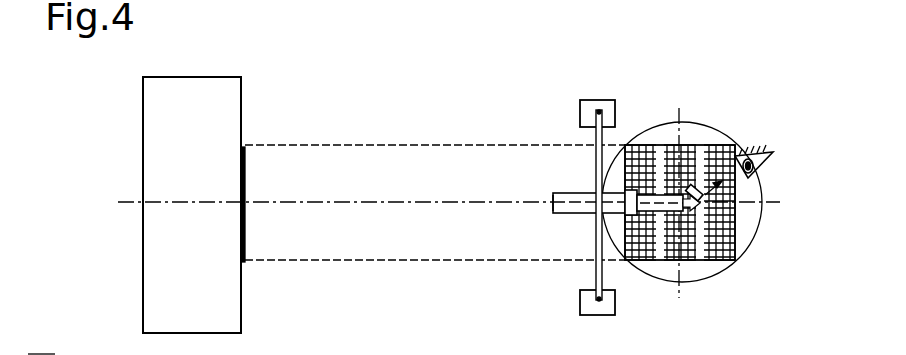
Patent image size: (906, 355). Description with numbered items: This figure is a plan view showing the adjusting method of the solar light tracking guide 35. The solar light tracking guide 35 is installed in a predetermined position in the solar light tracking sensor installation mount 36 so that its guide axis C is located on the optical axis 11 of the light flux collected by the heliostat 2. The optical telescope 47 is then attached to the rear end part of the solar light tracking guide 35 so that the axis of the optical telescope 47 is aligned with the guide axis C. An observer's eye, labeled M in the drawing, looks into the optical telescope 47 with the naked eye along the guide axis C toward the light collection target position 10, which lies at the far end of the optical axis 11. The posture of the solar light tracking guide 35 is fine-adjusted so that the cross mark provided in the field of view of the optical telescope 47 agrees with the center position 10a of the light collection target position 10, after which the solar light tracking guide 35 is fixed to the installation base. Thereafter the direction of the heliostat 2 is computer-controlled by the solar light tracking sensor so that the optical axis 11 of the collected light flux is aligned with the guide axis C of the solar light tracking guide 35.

The heliostat 2 is at (668, 140).
The light collection target position 10 is at (243, 170).
The center position of the light collection target position 10a is at (243, 207).
The optical axis 11 is at (315, 200).
The solar light tracking guide 35 is at (578, 190).
The solar light tracking sensor installation mount 36 is at (595, 248).
The optical telescope 47 is at (660, 208).
The guide axis C is at (545, 200).
The observer eye M is at (752, 140).